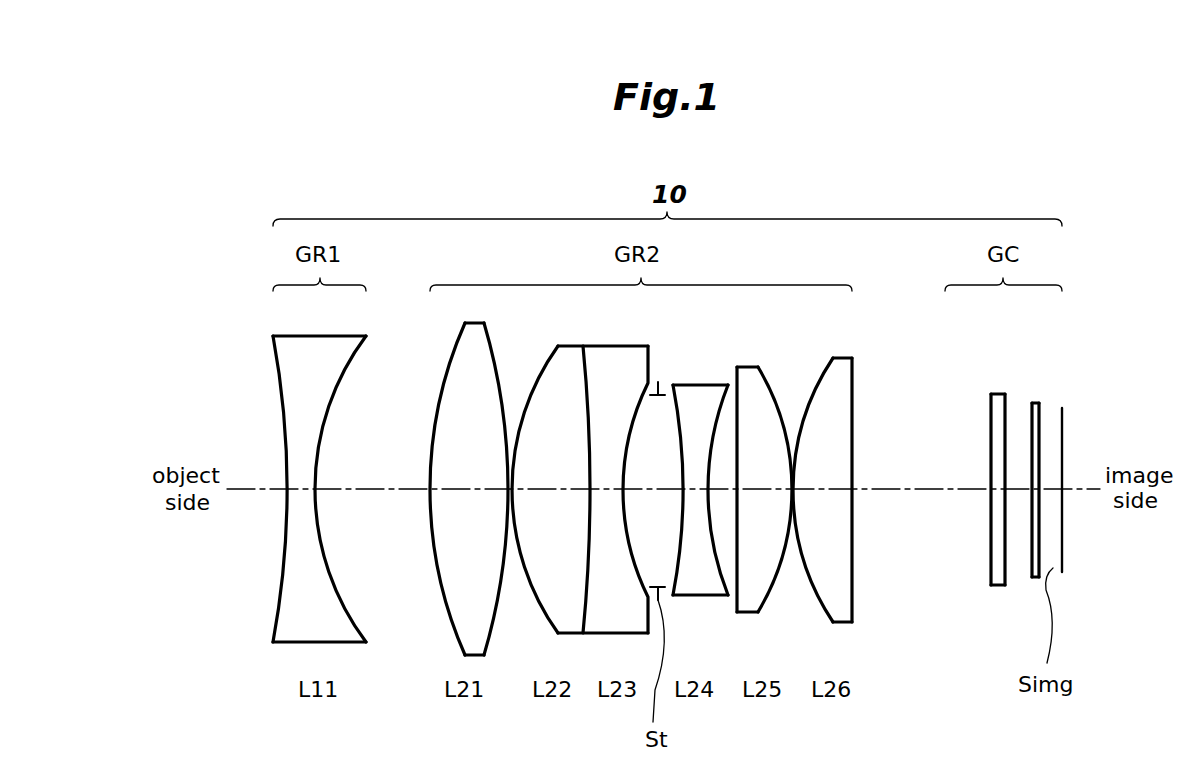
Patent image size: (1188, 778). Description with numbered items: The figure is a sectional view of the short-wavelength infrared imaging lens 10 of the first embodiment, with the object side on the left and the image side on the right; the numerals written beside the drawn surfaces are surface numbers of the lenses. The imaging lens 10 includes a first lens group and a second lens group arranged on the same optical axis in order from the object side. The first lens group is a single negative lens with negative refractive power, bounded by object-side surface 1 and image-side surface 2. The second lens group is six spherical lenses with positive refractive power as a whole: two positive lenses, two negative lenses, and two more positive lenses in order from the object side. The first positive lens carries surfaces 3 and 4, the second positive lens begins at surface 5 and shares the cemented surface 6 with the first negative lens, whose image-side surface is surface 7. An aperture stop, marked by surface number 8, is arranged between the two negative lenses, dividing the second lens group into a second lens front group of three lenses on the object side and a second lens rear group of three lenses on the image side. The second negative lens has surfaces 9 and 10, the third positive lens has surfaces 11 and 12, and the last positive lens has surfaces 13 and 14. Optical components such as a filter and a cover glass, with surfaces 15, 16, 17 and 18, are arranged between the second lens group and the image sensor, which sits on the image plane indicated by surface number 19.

The surface number 1 is at (284, 563).
The surface number 2 is at (317, 548).
The surface number 3 is at (434, 563).
The surface number 4 is at (505, 548).
The surface number 5 is at (544, 612).
The surface number 6 is at (587, 600).
The surface number 7 is at (628, 449).
The surface number 8 is at (658, 467).
The surface number 9 is at (682, 523).
The short-wavelength infrared imaging lens 10 is at (712, 442).
The surface number 11 is at (735, 607).
The surface number 12 is at (787, 539).
The surface number 13 is at (826, 612).
The surface number 14 is at (856, 582).
The surface number 15 is at (989, 509).
The surface number 16 is at (1006, 567).
The surface number 17 is at (1030, 544).
The surface number 18 is at (1040, 533).
The surface number 19 is at (1060, 444).